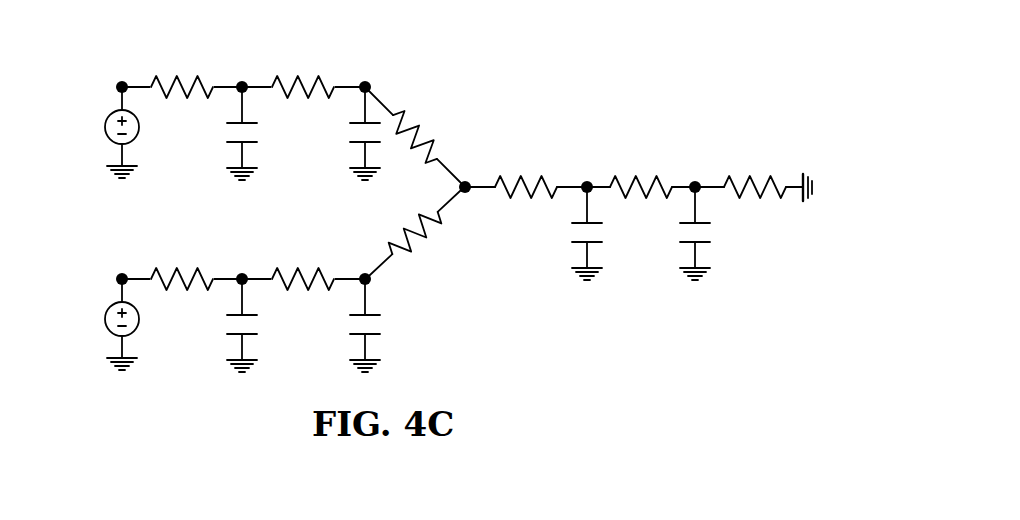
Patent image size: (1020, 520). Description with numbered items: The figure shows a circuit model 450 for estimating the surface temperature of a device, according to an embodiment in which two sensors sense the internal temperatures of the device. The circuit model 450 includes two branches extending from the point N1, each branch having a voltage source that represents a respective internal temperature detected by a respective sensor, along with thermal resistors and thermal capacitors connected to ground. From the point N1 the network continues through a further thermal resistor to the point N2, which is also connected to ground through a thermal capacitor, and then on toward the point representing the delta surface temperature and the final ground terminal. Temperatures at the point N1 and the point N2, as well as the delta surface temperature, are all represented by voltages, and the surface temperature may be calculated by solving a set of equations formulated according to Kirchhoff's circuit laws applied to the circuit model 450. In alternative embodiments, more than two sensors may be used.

The circuit model 450 is at (433, 200).
The point N1 is at (466, 177).
The point N2 is at (587, 176).